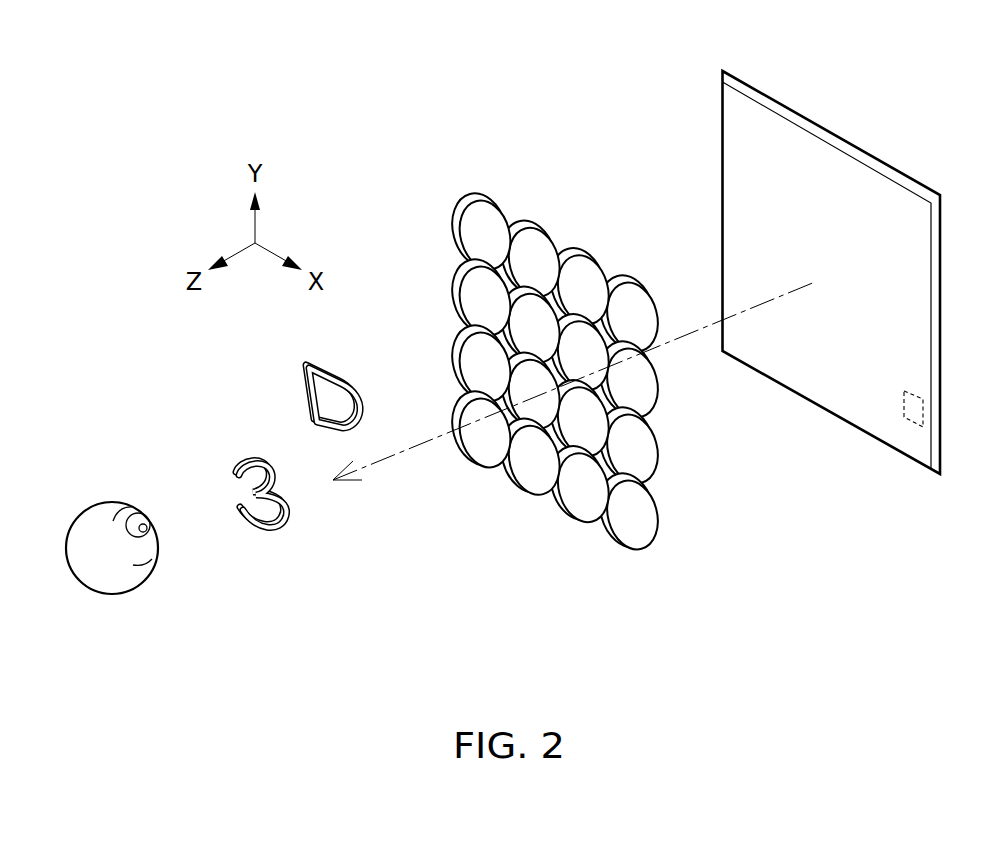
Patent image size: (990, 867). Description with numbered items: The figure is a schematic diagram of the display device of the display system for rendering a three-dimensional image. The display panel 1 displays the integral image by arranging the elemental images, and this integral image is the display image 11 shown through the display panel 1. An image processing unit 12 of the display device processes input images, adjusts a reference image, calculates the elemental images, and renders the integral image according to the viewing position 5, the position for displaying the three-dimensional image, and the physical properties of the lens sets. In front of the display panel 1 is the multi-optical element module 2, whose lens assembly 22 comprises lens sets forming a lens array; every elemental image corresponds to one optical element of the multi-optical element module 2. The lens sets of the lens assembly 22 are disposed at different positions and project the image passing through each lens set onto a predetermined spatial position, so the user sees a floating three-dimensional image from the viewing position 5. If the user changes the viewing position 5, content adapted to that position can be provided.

The display panel 1 is at (832, 286).
The display image 11 is at (911, 208).
The image processing unit 12 is at (910, 411).
The multi-optical element module 2 is at (529, 372).
The lens assembly 22 is at (484, 293).
The viewing position 5 is at (121, 493).